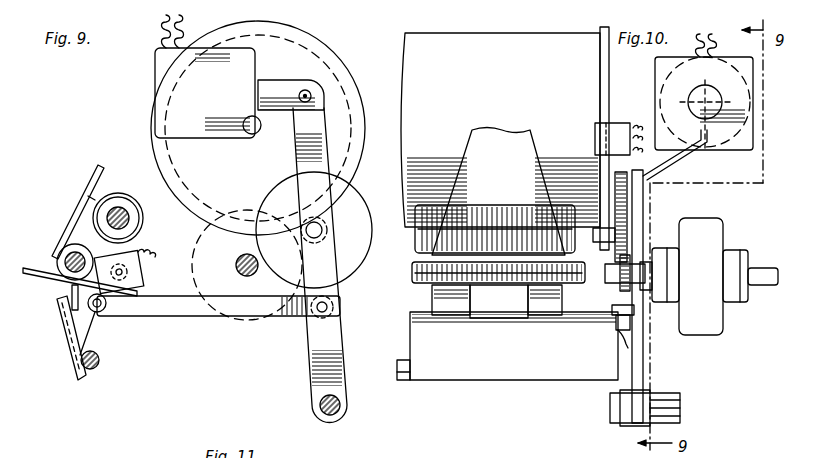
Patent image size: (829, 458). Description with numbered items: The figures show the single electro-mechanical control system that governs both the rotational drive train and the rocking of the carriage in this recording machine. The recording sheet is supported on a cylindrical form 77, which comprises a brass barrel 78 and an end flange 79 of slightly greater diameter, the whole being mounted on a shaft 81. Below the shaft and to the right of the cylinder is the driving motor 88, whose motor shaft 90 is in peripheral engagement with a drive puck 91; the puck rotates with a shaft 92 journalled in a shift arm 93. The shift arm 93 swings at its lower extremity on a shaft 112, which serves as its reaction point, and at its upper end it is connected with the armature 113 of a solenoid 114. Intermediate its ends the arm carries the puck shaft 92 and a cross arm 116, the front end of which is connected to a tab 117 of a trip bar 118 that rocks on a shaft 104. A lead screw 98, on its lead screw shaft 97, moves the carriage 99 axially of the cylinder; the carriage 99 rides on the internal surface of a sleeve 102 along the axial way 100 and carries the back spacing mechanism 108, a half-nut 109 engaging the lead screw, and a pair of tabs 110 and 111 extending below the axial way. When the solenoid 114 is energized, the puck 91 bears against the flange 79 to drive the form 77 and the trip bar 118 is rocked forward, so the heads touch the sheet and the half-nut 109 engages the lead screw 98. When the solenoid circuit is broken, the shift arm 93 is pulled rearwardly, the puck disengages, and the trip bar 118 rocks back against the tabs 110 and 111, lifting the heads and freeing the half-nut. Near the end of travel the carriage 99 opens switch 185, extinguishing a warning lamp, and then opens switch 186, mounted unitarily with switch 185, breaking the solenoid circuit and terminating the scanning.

In FIG. 9, the cylindrical form 77 is at (150, 125).
In FIG. 10, the cylindrical form 77 is at (404, 57).
In FIG. 10, the barrel 78 is at (500, 130).
In FIG. 9, the end flange 79 is at (306, 40).
In FIG. 10, the end flange 79 is at (598, 31).
In FIG. 9, the shaft 81 is at (258, 133).
In FIG. 10, the driving motor 88 is at (704, 222).
In FIG. 9, the motor shaft 90 is at (240, 278).
In FIG. 10, the motor shaft 90 is at (620, 278).
In FIG. 9, the drive puck 91 is at (352, 258).
In FIG. 10, the drive puck 91 is at (655, 170).
In FIG. 9, the shaft 92 is at (327, 231).
In FIG. 10, the shaft 92 is at (606, 244).
In FIG. 9, the shift arm 93 is at (332, 340).
In FIG. 10, the shift arm 93 is at (644, 368).
In FIG. 9, the lead screw shaft 97 is at (128, 214).
In FIG. 9, the lead screw 98 is at (119, 193).
In FIG. 10, the lead screw 98 is at (416, 241).
In FIG. 9, the carriage 99 is at (66, 237).
In FIG. 10, the carriage 99 is at (460, 167).
In FIG. 9, the axial way 100 is at (45, 283).
In FIG. 10, the axial way 100 is at (416, 283).
In FIG. 9, the sleeve 102 is at (60, 255).
In FIG. 9, the shaft 104 is at (97, 366).
In FIG. 10, the shaft 104 is at (398, 374).
In FIG. 9, the back spacing mechanism 108 is at (146, 270).
In FIG. 9, the half-nut 109 is at (88, 203).
In FIG. 9, the tab 110 is at (72, 297).
In FIG. 10, the tab 110 is at (532, 301).
In FIG. 10, the tab 111 is at (440, 300).
In FIG. 9, the shaft 112 is at (320, 406).
In FIG. 10, the shaft 112 is at (681, 412).
In FIG. 9, the armature 113 is at (275, 82).
In FIG. 9, the solenoid 114 is at (205, 76).
In FIG. 10, the solenoid 114 is at (704, 92).
In FIG. 9, the cross arm 116 is at (162, 314).
In FIG. 10, the cross arm 116 is at (640, 332).
In FIG. 9, the tab 117 is at (84, 318).
In FIG. 10, the tab 117 is at (626, 348).
In FIG. 9, the trip bar 118 is at (76, 366).
In FIG. 10, the trip bar 118 is at (534, 368).
In FIG. 10, the switch 185 is at (616, 114).
In FIG. 10, the switch 186 is at (614, 130).